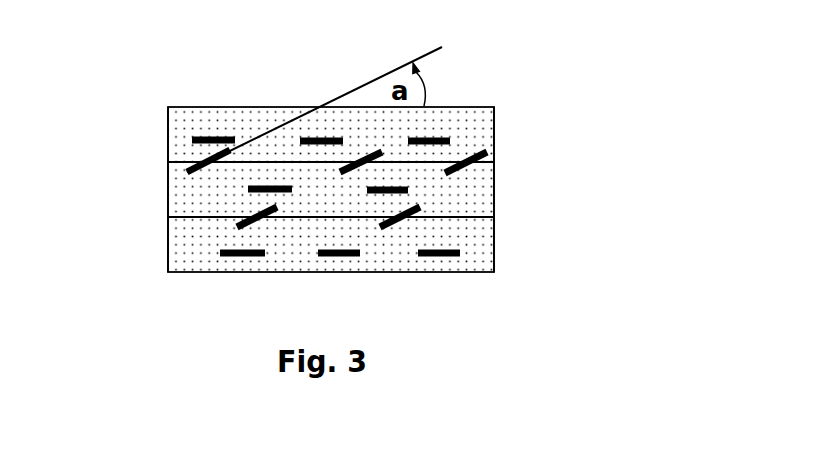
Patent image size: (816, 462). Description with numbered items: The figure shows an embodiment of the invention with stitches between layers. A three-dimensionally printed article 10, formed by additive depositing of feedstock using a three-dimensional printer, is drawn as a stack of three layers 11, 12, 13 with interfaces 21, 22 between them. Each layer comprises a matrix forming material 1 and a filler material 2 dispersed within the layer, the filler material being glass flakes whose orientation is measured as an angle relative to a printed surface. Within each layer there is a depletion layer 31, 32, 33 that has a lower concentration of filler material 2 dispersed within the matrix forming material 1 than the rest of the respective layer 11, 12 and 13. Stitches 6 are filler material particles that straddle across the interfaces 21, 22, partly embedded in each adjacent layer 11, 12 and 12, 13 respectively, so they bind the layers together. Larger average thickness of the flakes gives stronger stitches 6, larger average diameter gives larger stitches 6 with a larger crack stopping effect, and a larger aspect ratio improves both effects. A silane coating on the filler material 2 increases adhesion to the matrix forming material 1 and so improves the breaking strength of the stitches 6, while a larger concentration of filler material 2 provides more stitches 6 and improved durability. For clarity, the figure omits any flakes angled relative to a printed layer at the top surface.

The 3D printed article 10 is at (176, 72).
The stitches 6 is at (190, 151).
The interface 21 is at (156, 162).
The interface 22 is at (156, 217).
The matrix forming material 1 is at (176, 263).
The filler material 2 is at (470, 262).
The depletion layer 31 is at (506, 116).
The layer 11 is at (506, 135).
The depletion layer 32 is at (506, 173).
The layer 12 is at (506, 190).
The depletion layer 33 is at (506, 226).
The layer 13 is at (506, 245).